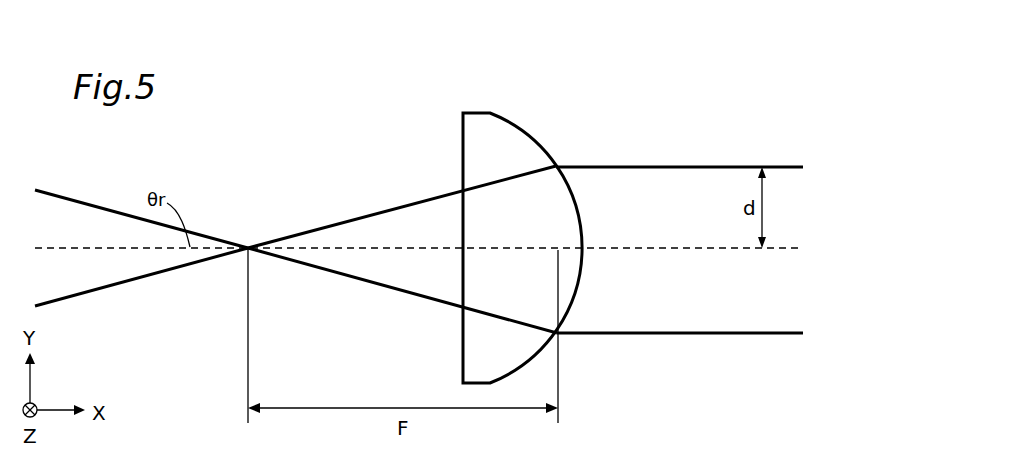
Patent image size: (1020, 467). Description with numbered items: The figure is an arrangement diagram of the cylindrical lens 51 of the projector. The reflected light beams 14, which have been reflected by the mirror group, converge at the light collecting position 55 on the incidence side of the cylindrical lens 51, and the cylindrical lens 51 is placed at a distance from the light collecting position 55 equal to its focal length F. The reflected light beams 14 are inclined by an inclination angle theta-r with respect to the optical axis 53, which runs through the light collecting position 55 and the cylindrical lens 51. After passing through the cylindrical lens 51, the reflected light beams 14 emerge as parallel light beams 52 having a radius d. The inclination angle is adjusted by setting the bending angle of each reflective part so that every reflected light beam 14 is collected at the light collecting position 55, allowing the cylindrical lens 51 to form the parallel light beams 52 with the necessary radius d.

The reflected light beams 14 is at (85, 227).
The light collecting position 55 is at (249, 245).
The optical axis 53 is at (382, 247).
The cylindrical lens 51 is at (480, 158).
The parallel light beams 52 is at (672, 193).